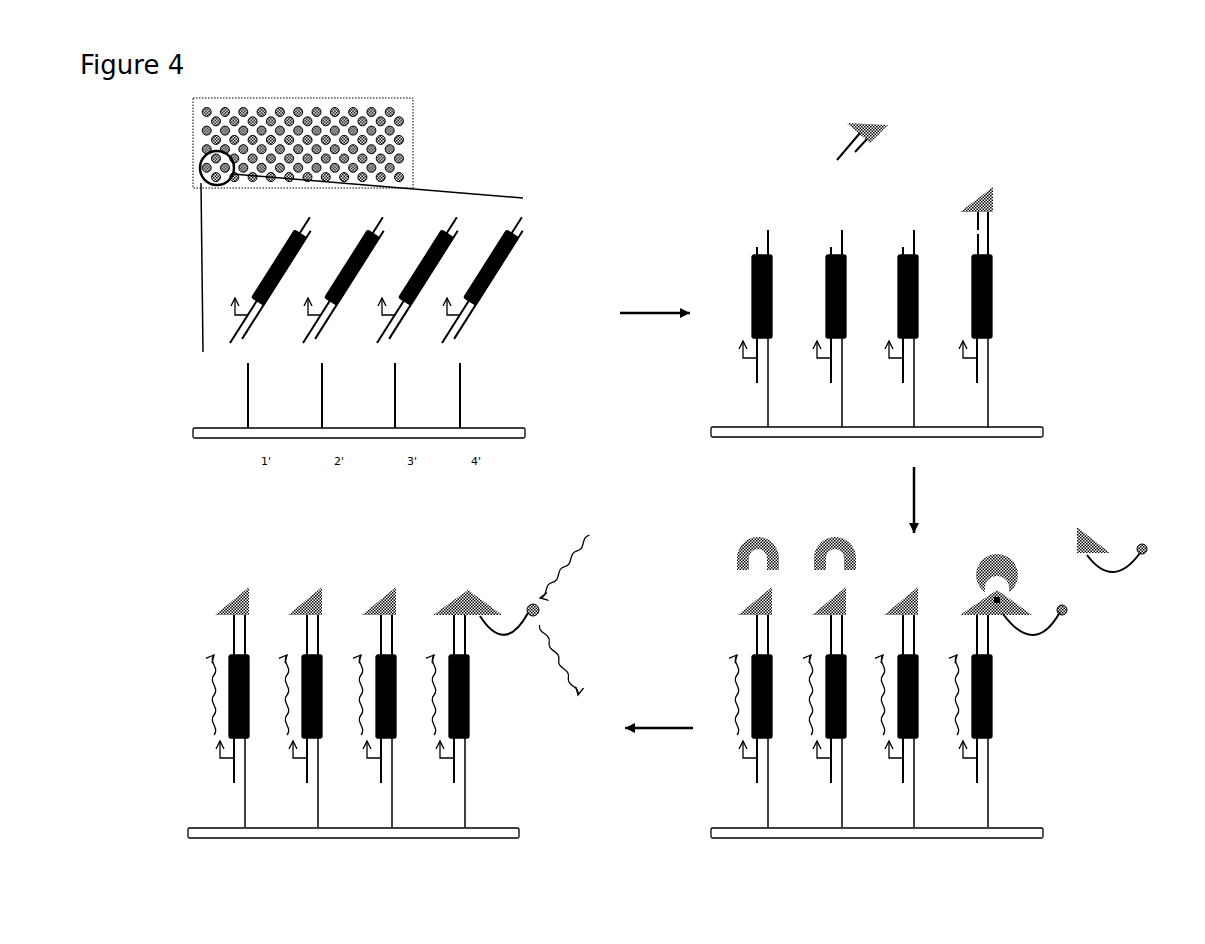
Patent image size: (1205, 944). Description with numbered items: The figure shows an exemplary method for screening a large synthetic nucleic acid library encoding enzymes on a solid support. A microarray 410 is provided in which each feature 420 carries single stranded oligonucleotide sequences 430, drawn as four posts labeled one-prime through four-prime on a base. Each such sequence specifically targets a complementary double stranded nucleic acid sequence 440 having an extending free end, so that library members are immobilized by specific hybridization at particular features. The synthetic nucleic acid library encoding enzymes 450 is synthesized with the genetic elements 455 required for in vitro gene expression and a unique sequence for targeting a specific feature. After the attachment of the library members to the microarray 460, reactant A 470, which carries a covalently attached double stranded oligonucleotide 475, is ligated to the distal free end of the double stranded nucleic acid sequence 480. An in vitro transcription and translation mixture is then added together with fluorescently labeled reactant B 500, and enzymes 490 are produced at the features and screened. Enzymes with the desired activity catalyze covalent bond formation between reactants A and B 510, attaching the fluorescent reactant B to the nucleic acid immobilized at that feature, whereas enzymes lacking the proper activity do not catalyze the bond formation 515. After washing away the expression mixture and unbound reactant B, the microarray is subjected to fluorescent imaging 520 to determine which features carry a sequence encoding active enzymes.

The microarray 410 is at (412, 102).
The feature 420 is at (406, 139).
The single stranded oligonucleotide sequences 430 is at (470, 396).
The double stranded nucleic acid sequence 440 is at (530, 212).
The synthetic nucleic acid library encoding enzymes 450 is at (500, 273).
The genetic elements 455 is at (476, 319).
The attachment of nucleic acid library members to the microarray 460 is at (1008, 258).
The reactant A 470 is at (892, 126).
The covalently attached double stranded oligonucleotide 475 is at (855, 162).
The distal free end of the double stranded nucleic acid sequence 480 is at (1008, 187).
The enzymes 490 is at (803, 663).
The fluorescently labeled reactant B 500 is at (1116, 577).
The covalent bond formation between reactants A and B 510 is at (997, 602).
The absence of bond formation 515 is at (820, 531).
The fluorescent imaging 520 is at (583, 698).